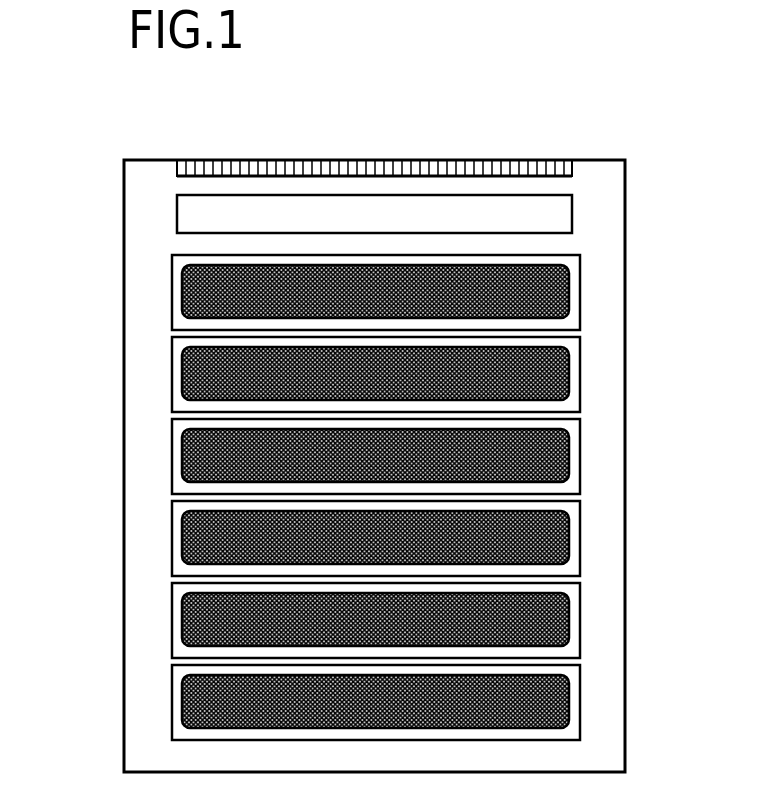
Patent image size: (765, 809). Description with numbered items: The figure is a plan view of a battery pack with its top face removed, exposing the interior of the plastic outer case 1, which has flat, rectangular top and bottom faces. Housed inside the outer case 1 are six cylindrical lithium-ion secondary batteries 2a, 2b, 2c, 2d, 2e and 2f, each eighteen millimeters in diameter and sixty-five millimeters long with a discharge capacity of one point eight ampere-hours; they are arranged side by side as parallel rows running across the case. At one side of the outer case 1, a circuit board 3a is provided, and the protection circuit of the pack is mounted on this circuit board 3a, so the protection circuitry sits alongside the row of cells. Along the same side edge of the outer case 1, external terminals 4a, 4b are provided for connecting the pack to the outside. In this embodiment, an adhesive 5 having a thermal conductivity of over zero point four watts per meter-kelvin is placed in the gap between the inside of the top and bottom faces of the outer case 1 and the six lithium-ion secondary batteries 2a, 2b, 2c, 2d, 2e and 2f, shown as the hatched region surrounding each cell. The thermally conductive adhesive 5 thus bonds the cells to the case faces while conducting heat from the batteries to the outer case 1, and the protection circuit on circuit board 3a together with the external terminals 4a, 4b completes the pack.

The outer case 1 is at (625, 203).
The lithium-ion secondary battery 2a is at (172, 298).
The lithium-ion secondary battery 2b is at (172, 380).
The lithium-ion secondary battery 2c is at (172, 462).
The lithium-ion secondary battery 2d is at (172, 544).
The lithium-ion secondary battery 2e is at (172, 626).
The lithium-ion secondary battery 2f is at (172, 708).
The circuit board 3a is at (360, 190).
The external terminal 4a is at (374, 133).
The external terminal 4b is at (488, 160).
The adhesive 5 is at (371, 497).